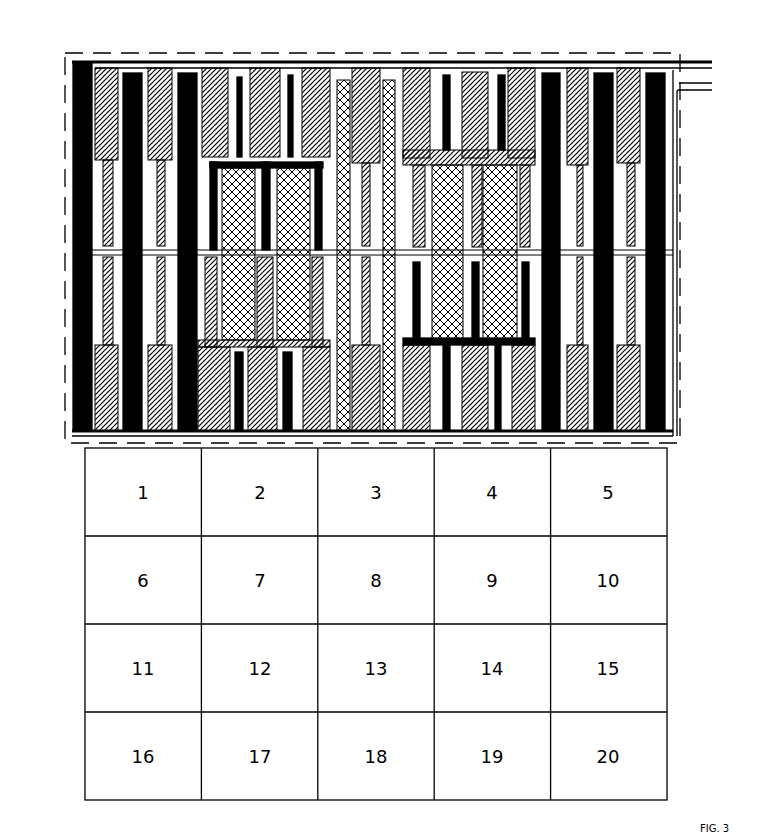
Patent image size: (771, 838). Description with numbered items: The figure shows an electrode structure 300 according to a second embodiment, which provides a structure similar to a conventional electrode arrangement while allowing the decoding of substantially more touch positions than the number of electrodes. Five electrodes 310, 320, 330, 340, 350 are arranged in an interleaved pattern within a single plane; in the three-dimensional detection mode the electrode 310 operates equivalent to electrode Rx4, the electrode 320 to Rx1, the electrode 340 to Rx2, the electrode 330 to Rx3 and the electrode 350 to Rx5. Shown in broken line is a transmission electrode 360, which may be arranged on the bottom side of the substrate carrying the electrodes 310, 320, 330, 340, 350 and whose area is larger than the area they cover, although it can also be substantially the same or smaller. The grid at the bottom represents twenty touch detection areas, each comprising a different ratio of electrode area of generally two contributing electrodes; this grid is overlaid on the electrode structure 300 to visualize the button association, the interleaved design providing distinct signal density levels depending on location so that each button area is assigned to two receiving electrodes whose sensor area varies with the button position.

The electrode structure 300 is at (293, 34).
The electrode 310 is at (72, 61).
The electrode 320 is at (420, 72).
The electrode 330 is at (108, 422).
The electrode 340 is at (668, 308).
The electrode 350 is at (228, 168).
The transmission electrode 360 is at (470, 52).